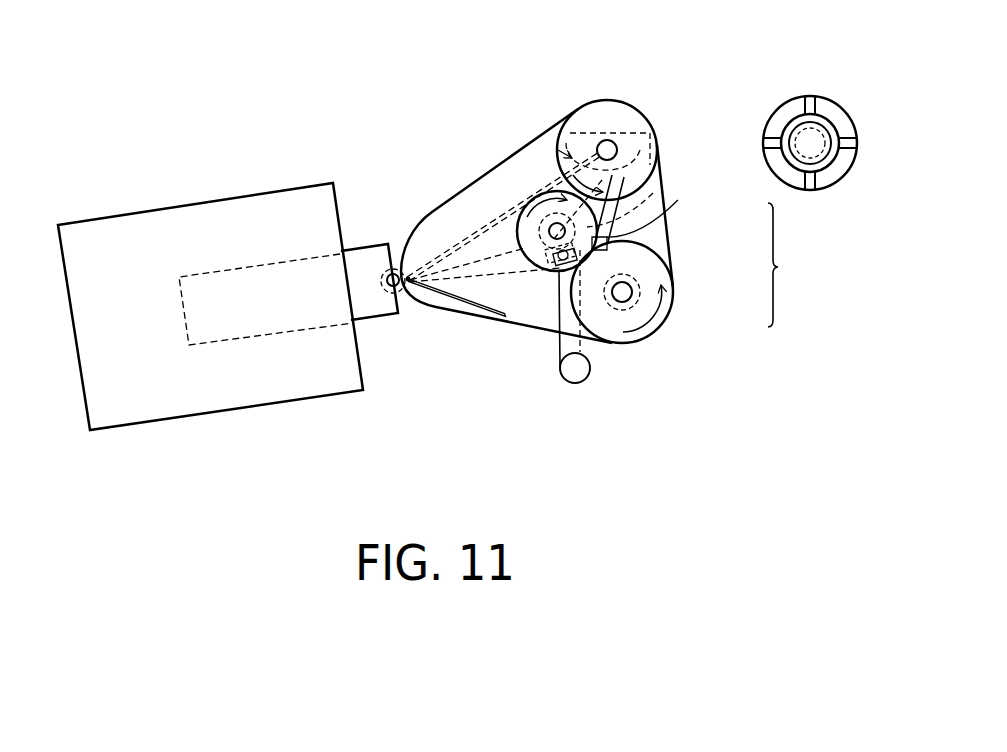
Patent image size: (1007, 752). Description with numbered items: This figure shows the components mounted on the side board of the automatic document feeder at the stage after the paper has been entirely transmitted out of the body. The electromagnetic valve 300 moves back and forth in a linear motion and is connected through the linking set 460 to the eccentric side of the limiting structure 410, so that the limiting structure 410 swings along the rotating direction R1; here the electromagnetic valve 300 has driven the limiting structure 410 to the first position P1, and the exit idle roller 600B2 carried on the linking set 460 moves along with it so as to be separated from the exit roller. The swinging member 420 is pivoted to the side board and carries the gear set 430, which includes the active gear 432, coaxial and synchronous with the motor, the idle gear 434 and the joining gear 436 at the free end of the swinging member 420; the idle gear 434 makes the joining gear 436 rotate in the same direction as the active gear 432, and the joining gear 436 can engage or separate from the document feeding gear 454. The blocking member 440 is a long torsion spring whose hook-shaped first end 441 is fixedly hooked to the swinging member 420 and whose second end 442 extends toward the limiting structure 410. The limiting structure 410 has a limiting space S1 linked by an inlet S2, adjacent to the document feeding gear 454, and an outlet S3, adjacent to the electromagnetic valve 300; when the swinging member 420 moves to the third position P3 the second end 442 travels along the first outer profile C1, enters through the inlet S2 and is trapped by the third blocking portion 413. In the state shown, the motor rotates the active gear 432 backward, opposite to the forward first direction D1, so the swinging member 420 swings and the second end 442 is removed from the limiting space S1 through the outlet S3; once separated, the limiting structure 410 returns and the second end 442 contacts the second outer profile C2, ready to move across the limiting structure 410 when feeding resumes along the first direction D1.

The electromagnetic valve 300 is at (85, 243).
The first position P1 is at (183, 303).
The limiting structure 410 is at (557, 120).
The third blocking portion 413 is at (535, 150).
The swinging member 420 is at (458, 217).
The gear set 430 is at (795, 265).
The active gear 432 is at (663, 308).
The idle gear 434 is at (598, 243).
The joining gear 436 is at (605, 240).
The blocking member 440 is at (447, 249).
The first end 441 is at (452, 300).
The second end 442 is at (537, 155).
The document feeding gear 454 is at (837, 108).
The linking set 460 is at (500, 272).
The exit idle roller 600B2 is at (573, 370).
The rotating direction R1 is at (640, 48).
The first outer profile C1 is at (668, 165).
The second outer profile C2 is at (598, 127).
The third position P3 is at (670, 178).
The limiting space S1 is at (640, 150).
The inlet S2 is at (657, 140).
The outlet S3 is at (663, 198).
The first direction D1 is at (663, 318).